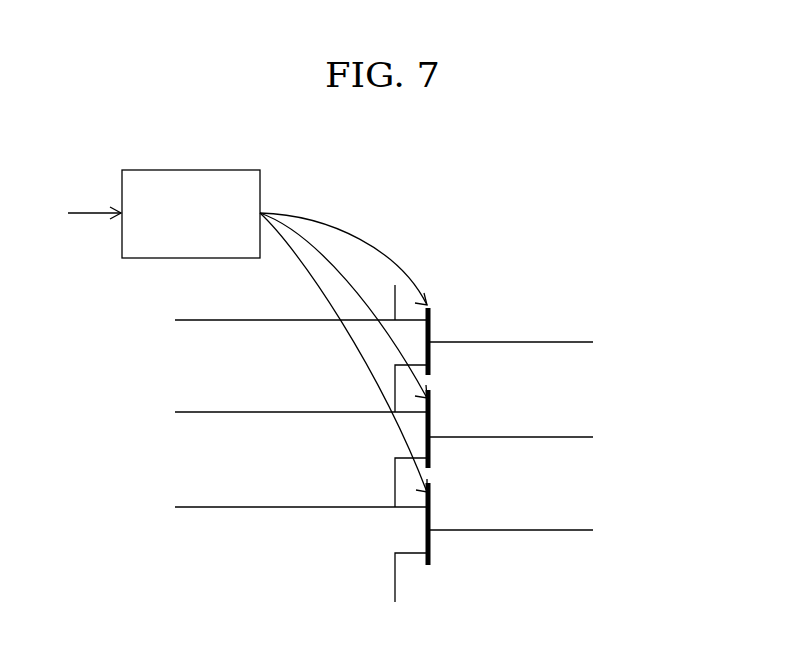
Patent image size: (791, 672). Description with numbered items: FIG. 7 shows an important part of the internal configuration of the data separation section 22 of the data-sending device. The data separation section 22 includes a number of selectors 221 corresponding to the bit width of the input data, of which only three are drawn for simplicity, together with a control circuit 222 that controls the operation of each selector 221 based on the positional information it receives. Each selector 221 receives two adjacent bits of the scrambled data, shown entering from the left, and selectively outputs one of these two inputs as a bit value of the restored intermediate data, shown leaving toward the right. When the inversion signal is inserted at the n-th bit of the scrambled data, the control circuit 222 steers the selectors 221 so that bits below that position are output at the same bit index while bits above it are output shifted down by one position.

The data separation section 22 is at (66, 51).
The control circuit 222 is at (185, 170).
The selector 221 is at (460, 279).